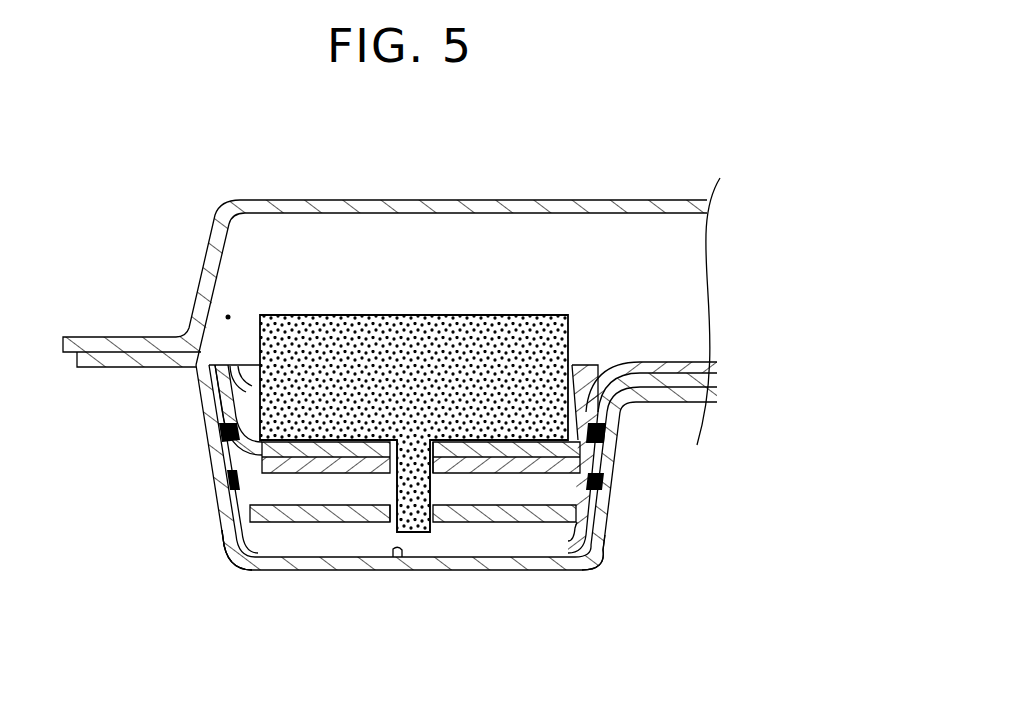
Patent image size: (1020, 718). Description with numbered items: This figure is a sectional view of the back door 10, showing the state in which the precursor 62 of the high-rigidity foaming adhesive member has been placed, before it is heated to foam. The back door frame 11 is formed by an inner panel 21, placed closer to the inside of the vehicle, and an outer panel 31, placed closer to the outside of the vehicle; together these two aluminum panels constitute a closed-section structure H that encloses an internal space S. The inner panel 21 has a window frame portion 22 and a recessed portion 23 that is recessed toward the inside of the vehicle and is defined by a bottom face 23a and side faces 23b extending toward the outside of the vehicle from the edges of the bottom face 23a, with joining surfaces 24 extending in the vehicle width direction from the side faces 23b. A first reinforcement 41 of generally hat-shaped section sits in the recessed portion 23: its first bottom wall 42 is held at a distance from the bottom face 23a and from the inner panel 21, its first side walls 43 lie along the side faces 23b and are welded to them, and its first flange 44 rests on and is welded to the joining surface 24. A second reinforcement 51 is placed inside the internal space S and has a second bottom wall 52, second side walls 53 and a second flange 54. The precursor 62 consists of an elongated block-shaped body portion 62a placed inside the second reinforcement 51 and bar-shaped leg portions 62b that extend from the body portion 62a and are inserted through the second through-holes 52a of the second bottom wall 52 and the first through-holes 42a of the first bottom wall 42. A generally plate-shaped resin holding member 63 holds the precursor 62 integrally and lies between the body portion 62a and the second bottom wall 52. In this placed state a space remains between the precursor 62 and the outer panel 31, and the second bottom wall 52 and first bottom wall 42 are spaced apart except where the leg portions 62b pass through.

The back door 10 is at (179, 250).
The back door frame 11 is at (385, 253).
The inner panel 21 is at (430, 490).
The window frame portion 22 is at (213, 215).
The recessed portion 23 is at (236, 566).
The bottom face 23a is at (392, 553).
The side face 23b is at (226, 528).
The joining surface 24 is at (102, 352).
The outer panel 31 is at (588, 207).
The first reinforcement 41 is at (547, 520).
The first bottom wall 42 is at (365, 558).
The first through-hole 42a is at (443, 522).
The first side wall 43 is at (215, 473).
The first flange 44 is at (700, 378).
The second reinforcement 51 is at (347, 470).
The second bottom wall 52 is at (474, 438).
The second through-hole 52a is at (404, 456).
The second side wall 53 is at (213, 412).
The second flange 54 is at (662, 362).
The precursor 62 is at (414, 385).
The body portion 62a is at (434, 317).
The leg portion 62b is at (422, 487).
The holding member 63 is at (200, 380).
The internal space S is at (228, 317).
The closed-section structure H is at (208, 554).